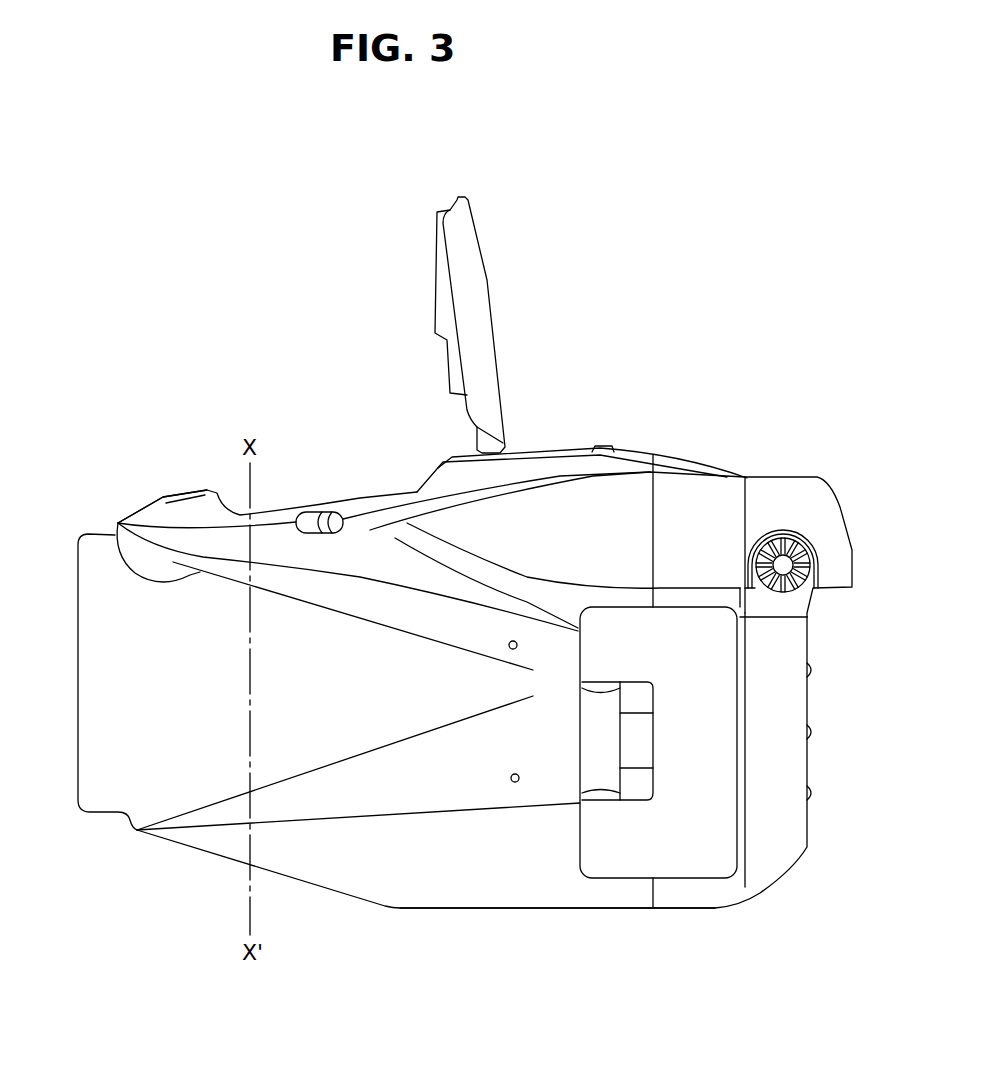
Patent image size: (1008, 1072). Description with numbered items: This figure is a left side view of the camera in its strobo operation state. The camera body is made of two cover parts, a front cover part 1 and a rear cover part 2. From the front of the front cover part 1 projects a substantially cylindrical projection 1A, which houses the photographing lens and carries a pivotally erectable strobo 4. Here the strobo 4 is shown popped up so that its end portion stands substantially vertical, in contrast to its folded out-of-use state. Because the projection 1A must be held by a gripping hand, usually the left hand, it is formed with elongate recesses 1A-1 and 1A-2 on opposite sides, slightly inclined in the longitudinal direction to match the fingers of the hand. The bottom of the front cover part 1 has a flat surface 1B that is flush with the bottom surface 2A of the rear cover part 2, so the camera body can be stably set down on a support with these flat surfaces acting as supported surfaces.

The front cover part 1 is at (450, 868).
The cylindrical projection 1A is at (210, 808).
The elongate recess 1A-1 is at (113, 535).
The elongate recess 1A-2 is at (345, 748).
The flat surface 1B is at (573, 908).
The rear cover part 2 is at (738, 888).
The bottom surface 2A is at (713, 908).
The strobo 4 is at (487, 280).